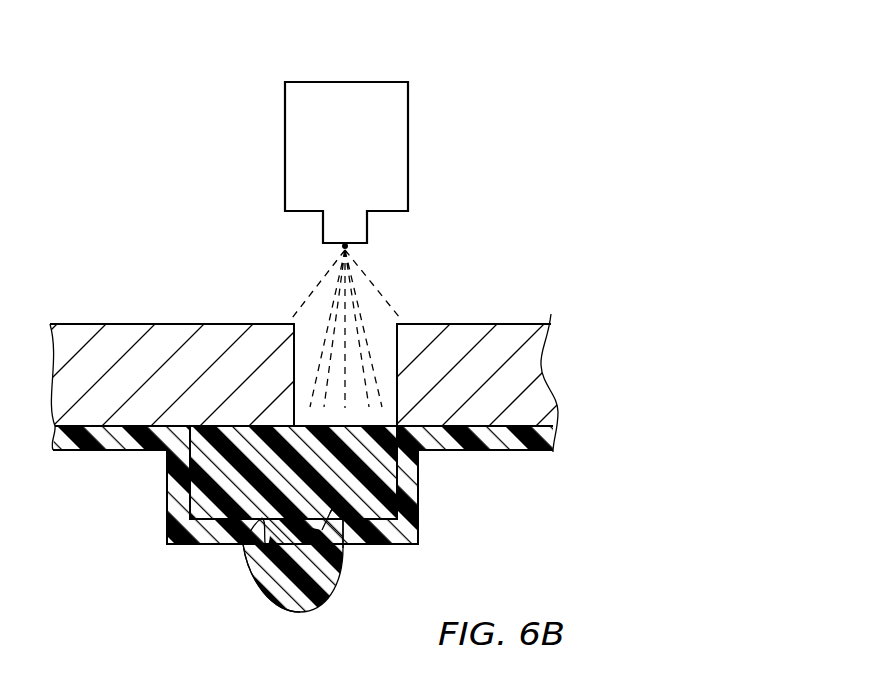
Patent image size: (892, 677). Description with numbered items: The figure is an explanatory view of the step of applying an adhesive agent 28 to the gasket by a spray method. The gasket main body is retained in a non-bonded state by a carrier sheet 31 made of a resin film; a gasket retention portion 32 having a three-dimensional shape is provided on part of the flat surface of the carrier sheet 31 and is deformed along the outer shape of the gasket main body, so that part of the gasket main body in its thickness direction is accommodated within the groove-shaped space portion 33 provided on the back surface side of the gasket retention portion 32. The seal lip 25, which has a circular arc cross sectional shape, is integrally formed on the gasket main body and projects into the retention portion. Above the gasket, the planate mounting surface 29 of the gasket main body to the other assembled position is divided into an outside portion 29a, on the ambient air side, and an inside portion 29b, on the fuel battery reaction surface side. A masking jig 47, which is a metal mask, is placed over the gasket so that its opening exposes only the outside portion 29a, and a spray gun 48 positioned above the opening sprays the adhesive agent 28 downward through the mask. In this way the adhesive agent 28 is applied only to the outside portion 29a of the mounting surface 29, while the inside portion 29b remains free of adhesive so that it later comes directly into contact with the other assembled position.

The seal lip 25 is at (290, 610).
The adhesive agent 28 is at (372, 282).
The mounting surface 29 is at (258, 427).
The outside portion 29a is at (382, 427).
The inside portion 29b is at (224, 427).
The carrier sheet 31 is at (503, 452).
The gasket retention portion 32 is at (255, 575).
The space portion 33 is at (340, 547).
The masking jig 47 is at (527, 362).
The spray gun 48 is at (385, 128).